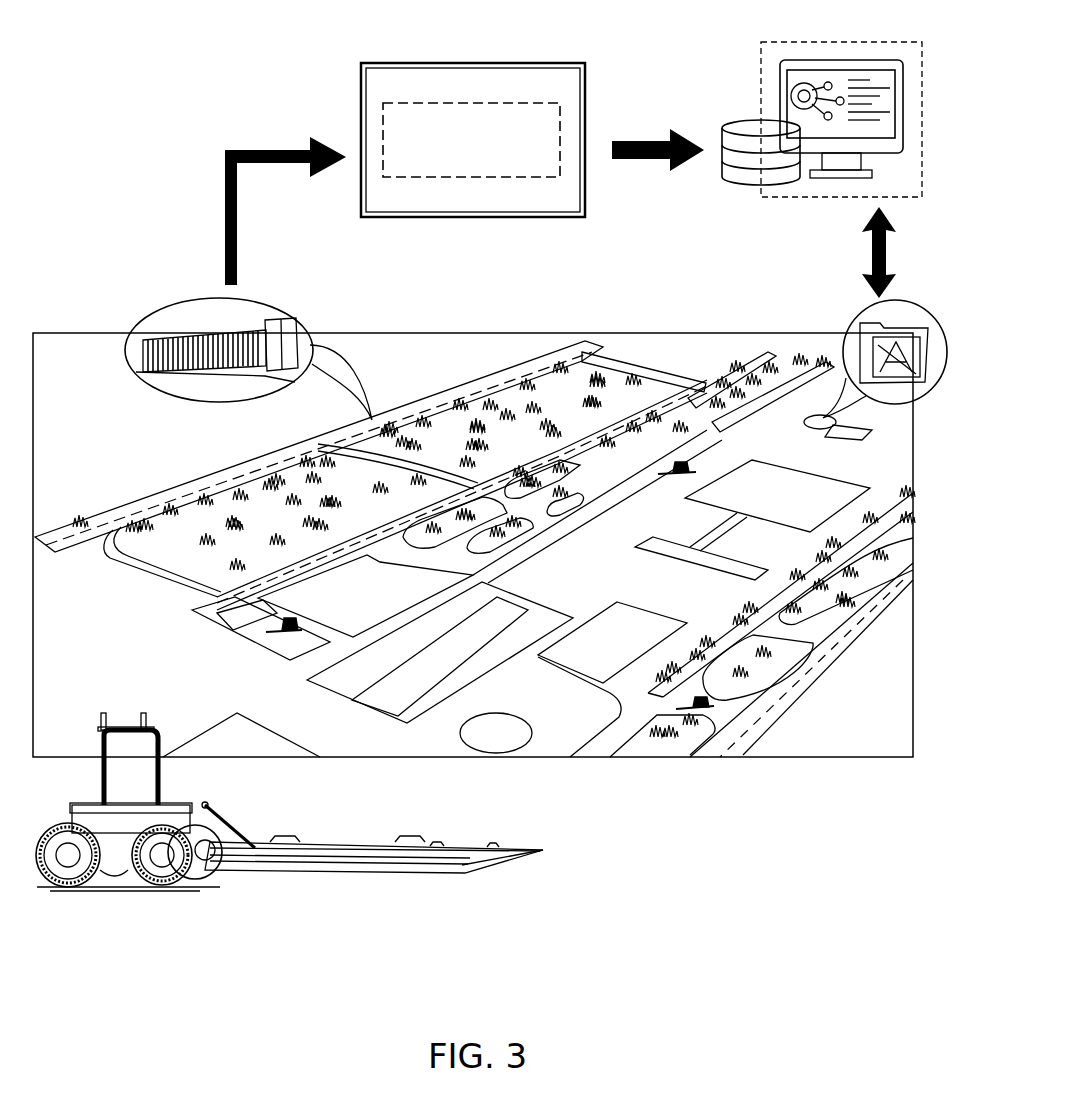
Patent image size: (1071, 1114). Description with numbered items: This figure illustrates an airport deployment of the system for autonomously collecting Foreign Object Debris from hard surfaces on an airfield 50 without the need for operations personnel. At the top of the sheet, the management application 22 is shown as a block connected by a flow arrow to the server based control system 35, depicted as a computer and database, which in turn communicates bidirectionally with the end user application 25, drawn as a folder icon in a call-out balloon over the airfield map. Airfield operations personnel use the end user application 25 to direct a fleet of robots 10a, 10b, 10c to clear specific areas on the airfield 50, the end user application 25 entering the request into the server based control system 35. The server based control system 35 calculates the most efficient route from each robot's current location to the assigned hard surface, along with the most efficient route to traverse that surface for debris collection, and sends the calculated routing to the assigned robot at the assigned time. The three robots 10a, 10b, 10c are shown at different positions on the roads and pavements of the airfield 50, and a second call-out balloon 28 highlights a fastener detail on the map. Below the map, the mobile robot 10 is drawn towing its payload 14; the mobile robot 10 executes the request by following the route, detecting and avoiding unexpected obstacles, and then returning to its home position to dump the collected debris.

The management application 22 is at (528, 63).
The server based control system 35 is at (838, 42).
The fastener (bolt) 28 is at (192, 330).
The airfield 50 is at (462, 350).
The end user application 25 is at (860, 330).
The robot 10a is at (292, 628).
The robot 10b is at (684, 460).
The robot 10c is at (712, 708).
The payload 14 is at (348, 842).
The mobile robot 10 is at (130, 912).